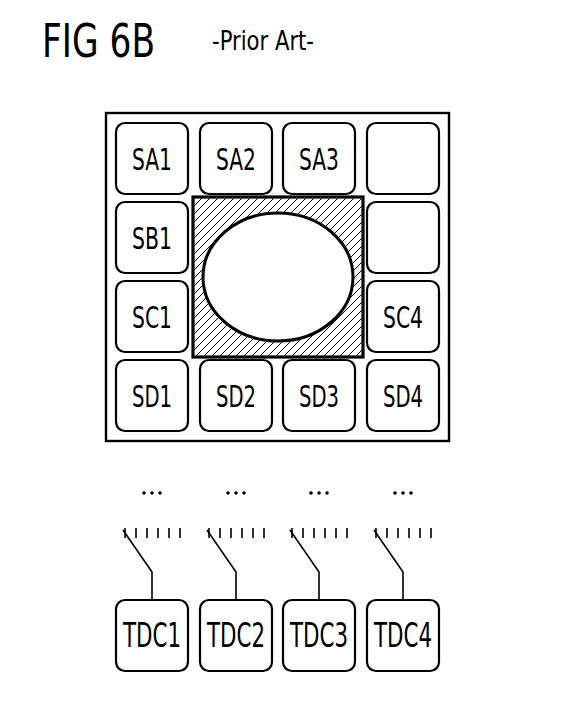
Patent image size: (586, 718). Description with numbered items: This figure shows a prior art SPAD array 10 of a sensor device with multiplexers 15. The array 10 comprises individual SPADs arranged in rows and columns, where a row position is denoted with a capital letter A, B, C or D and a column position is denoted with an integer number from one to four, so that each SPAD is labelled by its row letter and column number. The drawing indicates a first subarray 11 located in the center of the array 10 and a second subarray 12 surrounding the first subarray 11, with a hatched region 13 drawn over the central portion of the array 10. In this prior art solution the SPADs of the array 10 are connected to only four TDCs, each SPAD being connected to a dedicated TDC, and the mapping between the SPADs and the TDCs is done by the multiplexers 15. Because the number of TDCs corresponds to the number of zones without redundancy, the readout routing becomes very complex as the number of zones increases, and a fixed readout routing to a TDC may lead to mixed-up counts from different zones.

The array 10 is at (365, 114).
The first subarray 11 is at (370, 215).
The second subarray 12 is at (423, 142).
The light spot 13 is at (282, 227).
The multiplexers 15 is at (101, 493).